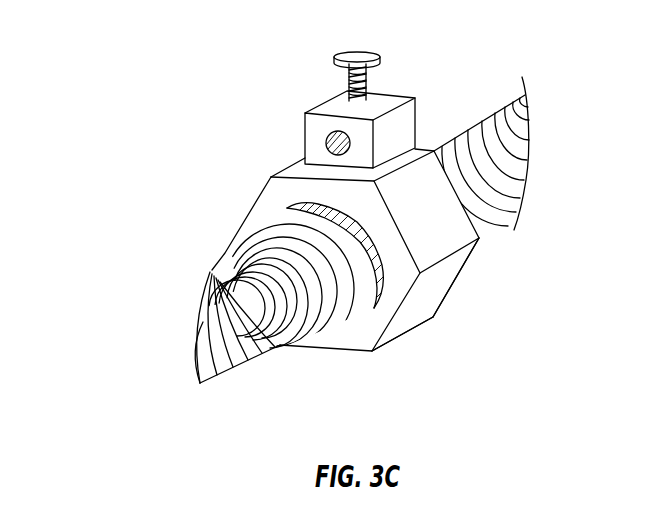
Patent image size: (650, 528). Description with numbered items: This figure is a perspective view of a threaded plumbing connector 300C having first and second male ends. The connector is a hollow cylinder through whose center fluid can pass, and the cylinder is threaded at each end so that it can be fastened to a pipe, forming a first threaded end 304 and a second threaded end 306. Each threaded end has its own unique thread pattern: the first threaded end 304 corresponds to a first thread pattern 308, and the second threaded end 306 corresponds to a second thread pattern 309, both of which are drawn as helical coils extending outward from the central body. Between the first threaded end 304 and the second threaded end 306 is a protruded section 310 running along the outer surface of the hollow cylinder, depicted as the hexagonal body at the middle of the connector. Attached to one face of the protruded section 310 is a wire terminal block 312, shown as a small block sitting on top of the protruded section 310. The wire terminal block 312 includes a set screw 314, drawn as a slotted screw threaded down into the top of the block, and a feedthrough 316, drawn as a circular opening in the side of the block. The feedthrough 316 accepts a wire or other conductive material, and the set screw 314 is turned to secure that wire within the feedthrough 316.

The threaded plumbing connector 300C is at (153, 167).
The first threaded end 304 is at (238, 378).
The second threaded end 306 is at (500, 240).
The first thread pattern 308 is at (211, 276).
The second thread pattern 309 is at (490, 112).
The protruded section 310 is at (400, 338).
The wire terminal block 312 is at (403, 96).
The set screw 314 is at (355, 53).
The feedthrough 316 is at (318, 140).